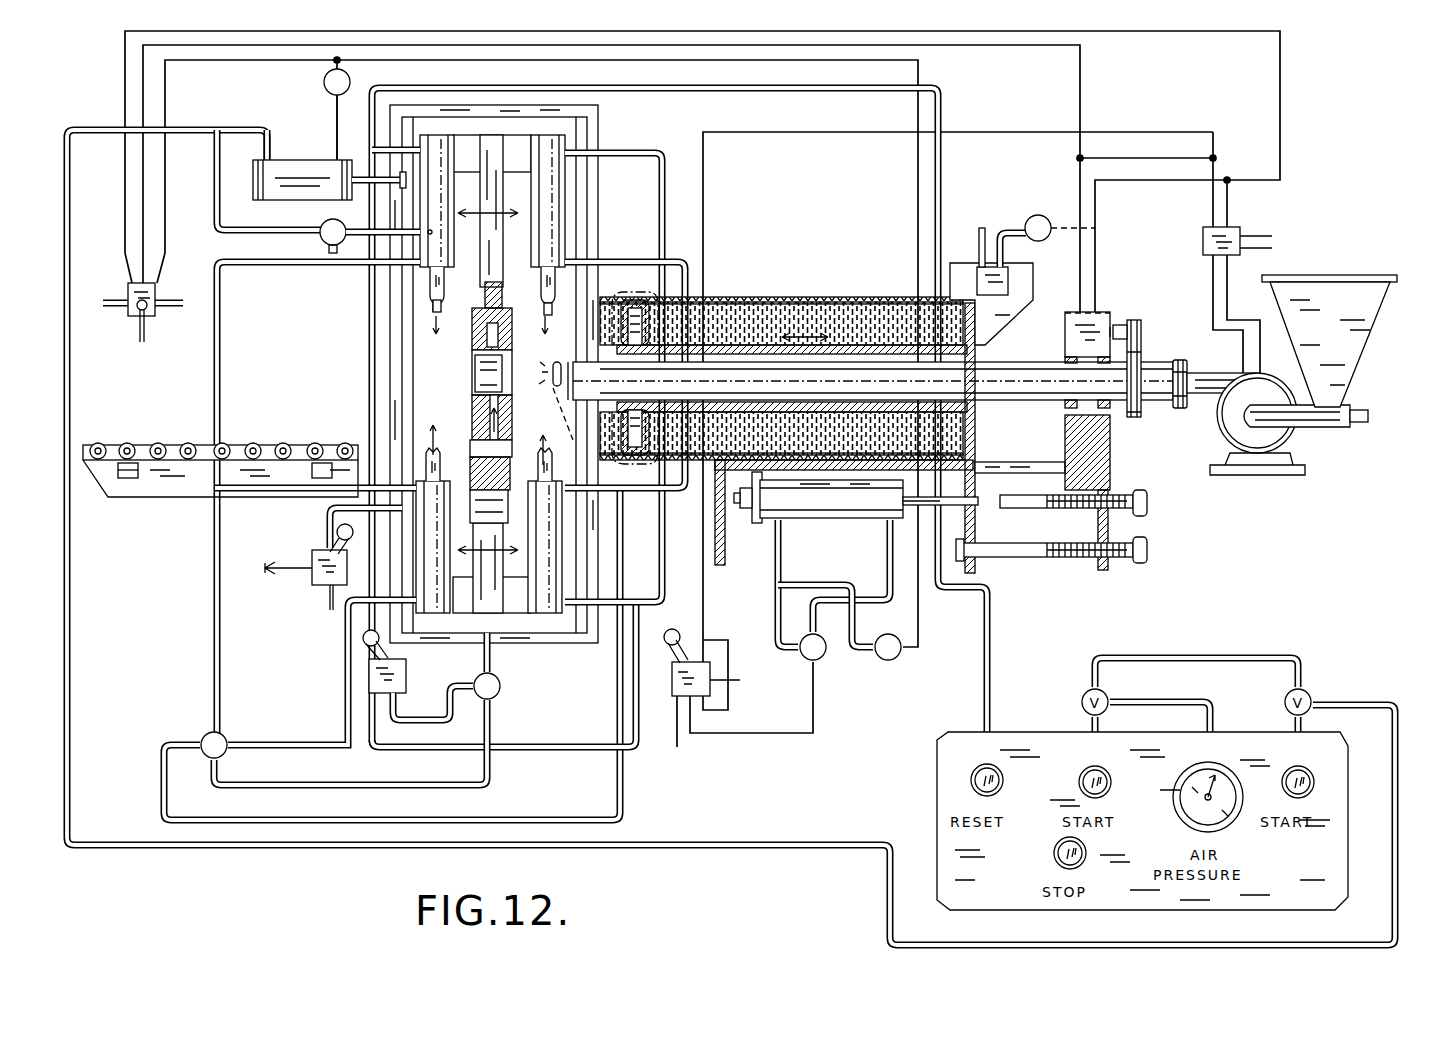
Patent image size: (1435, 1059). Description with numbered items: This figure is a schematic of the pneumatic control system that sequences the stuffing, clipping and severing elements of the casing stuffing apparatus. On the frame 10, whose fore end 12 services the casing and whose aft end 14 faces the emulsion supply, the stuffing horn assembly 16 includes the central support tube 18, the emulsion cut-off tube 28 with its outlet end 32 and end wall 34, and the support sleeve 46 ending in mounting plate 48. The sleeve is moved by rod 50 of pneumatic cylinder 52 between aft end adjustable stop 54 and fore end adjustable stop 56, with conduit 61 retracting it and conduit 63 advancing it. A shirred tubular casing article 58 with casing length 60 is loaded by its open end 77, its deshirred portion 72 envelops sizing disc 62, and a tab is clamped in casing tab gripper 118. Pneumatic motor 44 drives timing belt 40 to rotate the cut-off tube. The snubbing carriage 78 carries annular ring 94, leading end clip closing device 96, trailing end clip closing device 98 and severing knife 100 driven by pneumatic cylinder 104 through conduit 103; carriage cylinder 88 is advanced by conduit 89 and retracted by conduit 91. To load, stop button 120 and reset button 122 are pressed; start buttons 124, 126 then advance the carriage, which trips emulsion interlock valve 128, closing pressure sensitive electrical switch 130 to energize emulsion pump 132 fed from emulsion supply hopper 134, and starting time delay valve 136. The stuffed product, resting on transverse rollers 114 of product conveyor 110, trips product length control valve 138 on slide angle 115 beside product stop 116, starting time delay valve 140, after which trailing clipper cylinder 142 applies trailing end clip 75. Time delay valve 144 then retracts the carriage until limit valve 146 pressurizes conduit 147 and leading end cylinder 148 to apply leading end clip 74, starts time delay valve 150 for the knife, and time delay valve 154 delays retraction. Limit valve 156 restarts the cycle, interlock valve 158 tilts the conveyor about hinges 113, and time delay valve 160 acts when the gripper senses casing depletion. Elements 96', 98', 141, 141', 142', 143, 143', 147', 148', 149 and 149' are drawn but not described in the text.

The frame 10 is at (1110, 452).
The fore end 12 is at (245, 556).
The aft end 14 is at (1188, 495).
The stuffing horn assembly 16 is at (821, 288).
The central support tube 18 is at (1157, 410).
The emulsion cut-off tube 28 is at (1008, 372).
The outlet end 32 is at (568, 357).
The end wall 34 is at (550, 370).
The timing belt 40 is at (1141, 326).
The pneumatic motor 44 is at (1065, 326).
The support sleeve 46 is at (856, 360).
The mounting plate 48 is at (976, 428).
The rod 50 is at (930, 502).
The pneumatic cylinder 52 is at (815, 518).
The aft end adjustable stop 54 is at (1025, 508).
The fore end adjustable stop 56 is at (1022, 557).
The shirred tubular casing article 58 is at (760, 298).
The casing length 60 is at (862, 300).
The conduit 61 is at (760, 524).
The sizing disc 62 is at (636, 300).
The conduit 63 is at (887, 520).
The deshirred portion 72 is at (567, 417).
The leading end clip 74 is at (535, 378).
The trailing end clip 75 is at (442, 303).
The open end 77 is at (980, 448).
The snubbing carriage 78 is at (612, 125).
The pneumatic cylinder 88 is at (253, 180).
The conduit 89 is at (264, 150).
The conduit 91 is at (335, 152).
The annular ring 94 is at (485, 345).
The leading end clip closing device 96 is at (528, 448).
The upper nozzle 96' is at (585, 302).
The trailing end clip closing device 98 is at (417, 430).
The upper nozzle 98' is at (384, 309).
The severing knife 100 is at (490, 430).
The conduit 103 is at (482, 668).
The pneumatic cylinder 104 is at (495, 590).
The product conveyor 110 is at (270, 432).
The hinges 113 is at (127, 480).
The transverse rollers 114 is at (158, 444).
The slide angle 115 is at (163, 310).
The product stop 116 is at (168, 274).
The casing tab gripper 118 is at (1000, 287).
The stop button 120 is at (1055, 853).
The reset button 122 is at (972, 778).
The start button 124 is at (1080, 778).
The start button 126 is at (1284, 778).
The emulsion interlock valve 128 is at (718, 707).
The pressure sensitive electrical switch 130 is at (1205, 235).
The emulsion pump 132 is at (1255, 392).
The emulsion supply hopper 134 is at (1328, 292).
The time delay valve 136 is at (823, 658).
The product length control valve 138 is at (137, 308).
The time delay valve 140 is at (898, 658).
The lower air line 141 is at (322, 672).
The upper air line 141' is at (351, 129).
The trailing clipper cylinder 142 is at (433, 559).
The upper cylinder 142' is at (363, 219).
The lower air line 143 is at (315, 449).
The upper air line 143' is at (318, 497).
The time delay valve 144 is at (324, 82).
The limit valve 146 is at (369, 678).
The conduit 147 is at (578, 640).
The upper air line 147' is at (613, 377).
The leading end cylinder 148 is at (551, 574).
The upper cylinder 148' is at (598, 200).
The lower air line 149 is at (613, 510).
The upper air line 149' is at (625, 350).
The time delay valve 150 is at (498, 694).
The time delay valve 154 is at (203, 736).
The limit valve 156 is at (325, 243).
The interlock valve 158 is at (318, 552).
The time delay valve 160 is at (1038, 215).